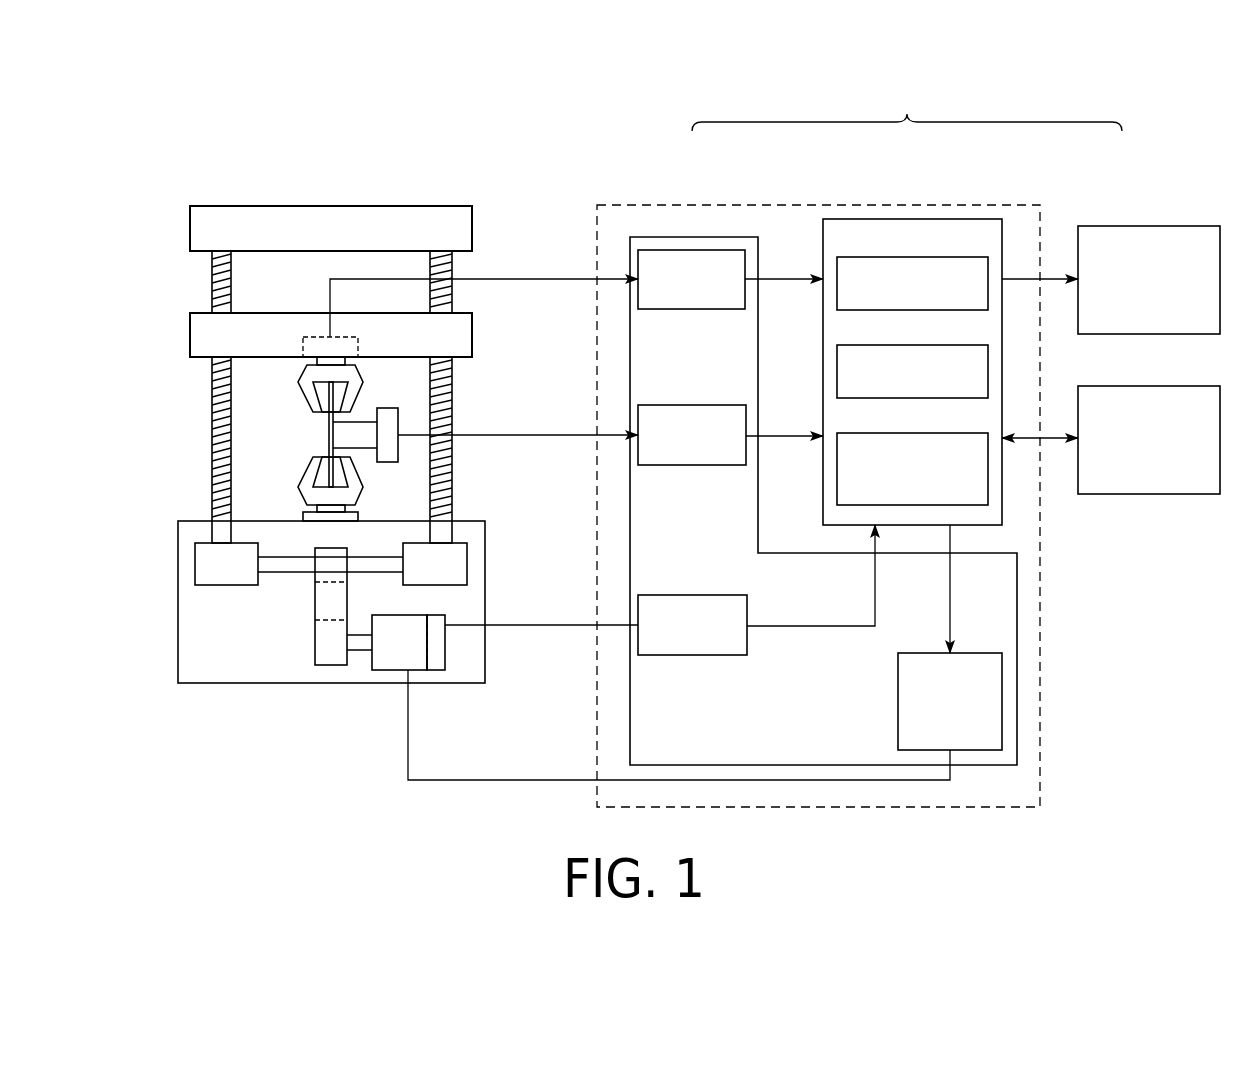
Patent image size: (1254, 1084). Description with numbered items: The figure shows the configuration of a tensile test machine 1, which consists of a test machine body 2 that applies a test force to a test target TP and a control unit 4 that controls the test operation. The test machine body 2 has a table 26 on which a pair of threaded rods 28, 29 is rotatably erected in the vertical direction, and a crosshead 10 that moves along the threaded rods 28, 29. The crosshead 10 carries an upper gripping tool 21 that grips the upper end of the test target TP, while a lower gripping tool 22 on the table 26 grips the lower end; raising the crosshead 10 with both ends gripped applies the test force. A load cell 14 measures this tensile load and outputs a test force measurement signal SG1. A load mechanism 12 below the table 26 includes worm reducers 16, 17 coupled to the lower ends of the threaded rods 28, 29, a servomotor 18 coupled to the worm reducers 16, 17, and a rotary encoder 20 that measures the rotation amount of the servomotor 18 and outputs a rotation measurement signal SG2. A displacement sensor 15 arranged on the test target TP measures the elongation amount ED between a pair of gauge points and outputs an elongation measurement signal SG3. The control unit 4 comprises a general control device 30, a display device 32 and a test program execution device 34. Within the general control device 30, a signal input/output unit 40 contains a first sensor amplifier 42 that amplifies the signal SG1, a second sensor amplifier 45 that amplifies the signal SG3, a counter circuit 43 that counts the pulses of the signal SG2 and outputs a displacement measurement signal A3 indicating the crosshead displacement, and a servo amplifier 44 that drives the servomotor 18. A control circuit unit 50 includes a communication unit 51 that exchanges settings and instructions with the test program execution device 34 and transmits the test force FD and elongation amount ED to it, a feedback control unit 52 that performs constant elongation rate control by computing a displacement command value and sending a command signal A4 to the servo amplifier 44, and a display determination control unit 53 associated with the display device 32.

The tensile test machine 1 is at (646, 98).
The test machine body 2 is at (368, 178).
The control unit 4 is at (907, 108).
The crosshead 10 is at (186, 335).
The load mechanism 12 is at (308, 715).
The load cell 14 is at (318, 346).
The displacement sensor 15 is at (388, 408).
The worm reducer 16 is at (232, 577).
The worm reducer 17 is at (450, 570).
The servomotor 18 is at (392, 663).
The rotary encoder 20 is at (439, 639).
The upper gripping tool 21 is at (310, 392).
The lower gripping tool 22 is at (354, 492).
The table 26 is at (186, 649).
The threaded rod 28 is at (207, 465).
The threaded rod 29 is at (454, 484).
The general control device 30 is at (810, 204).
The display device 32 is at (1112, 240).
The test program execution device 34 is at (1133, 482).
The signal input/output unit 40 is at (700, 236).
The first sensor amplifier 42 is at (685, 297).
The counter circuit 43 is at (705, 636).
The servo amplifier 44 is at (907, 713).
The second sensor amplifier 45 is at (685, 452).
The control circuit unit 50 is at (905, 236).
The communication unit 51 is at (908, 257).
The feedback control unit 52 is at (908, 345).
The display determination control unit 53 is at (908, 433).
The test target TP is at (328, 435).
The test force measurement signal SG1 is at (545, 277).
The rotation measurement signal SG2 is at (504, 623).
The elongation measurement signal SG3 is at (545, 433).
The test force FD is at (795, 276).
The elongation amount ED is at (795, 433).
The displacement measurement signal A3 is at (875, 588).
The command signal A4 is at (950, 628).